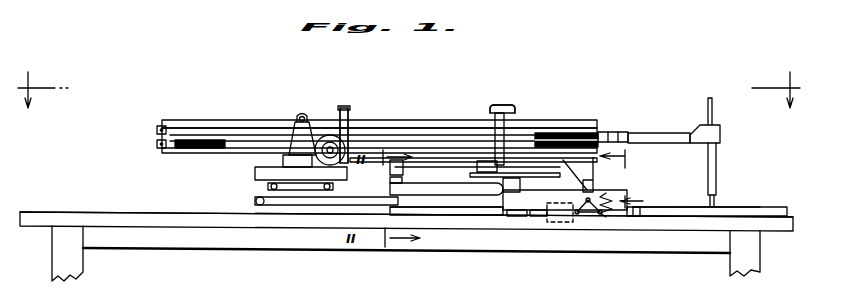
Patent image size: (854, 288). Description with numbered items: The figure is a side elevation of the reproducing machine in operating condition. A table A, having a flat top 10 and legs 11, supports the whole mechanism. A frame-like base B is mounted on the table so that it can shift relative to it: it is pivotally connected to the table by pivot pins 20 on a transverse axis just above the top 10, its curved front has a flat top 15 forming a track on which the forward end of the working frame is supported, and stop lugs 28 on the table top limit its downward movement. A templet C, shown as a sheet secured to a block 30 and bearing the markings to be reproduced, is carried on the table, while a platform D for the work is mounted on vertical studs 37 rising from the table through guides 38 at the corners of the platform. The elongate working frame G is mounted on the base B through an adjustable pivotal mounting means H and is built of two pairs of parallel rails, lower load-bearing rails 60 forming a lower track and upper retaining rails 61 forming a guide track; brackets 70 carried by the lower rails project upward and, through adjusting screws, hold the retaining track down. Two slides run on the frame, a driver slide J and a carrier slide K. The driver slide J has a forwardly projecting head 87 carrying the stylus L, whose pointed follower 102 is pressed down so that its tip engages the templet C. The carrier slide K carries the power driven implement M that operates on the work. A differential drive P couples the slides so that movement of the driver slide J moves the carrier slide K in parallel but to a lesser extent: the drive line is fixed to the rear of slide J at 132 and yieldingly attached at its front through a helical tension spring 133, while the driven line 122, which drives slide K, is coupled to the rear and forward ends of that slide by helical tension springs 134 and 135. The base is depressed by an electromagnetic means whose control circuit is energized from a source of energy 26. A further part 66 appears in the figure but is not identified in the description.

The table A is at (117, 206).
The flat top 10 is at (188, 212).
The legs 11 is at (76, 262).
The templet C is at (760, 207).
The pointed follower 102 is at (716, 204).
The block 30 is at (672, 207).
The working frame G is at (252, 124).
The upper guide or retaining rails 61 is at (205, 120).
The drive line fixed attachment 132 is at (166, 122).
The helical tension spring 134 is at (163, 147).
The lower load-bearing rails 60 is at (200, 152).
The helical tension spring 135 is at (553, 137).
The helical tension spring 133 is at (600, 134).
The driver slide J is at (661, 133).
The head 87 is at (720, 130).
The stylus L is at (728, 159).
The source of energy 26 is at (665, 197).
The flat top of base front 15 is at (600, 190).
The brackets 70 is at (350, 116).
The differential drive P is at (345, 118).
The power driven implement M is at (528, 113).
The platform D is at (433, 178).
The mounting means H is at (242, 177).
The carrier slide K is at (252, 149).
The driven line 122 is at (280, 133).
The pin 66 is at (304, 115).
The guides 38 is at (392, 180).
The pivot pins 20 is at (256, 203).
The base B is at (445, 223).
The vertical studs 37 is at (395, 212).
The stop lugs 28 is at (530, 212).